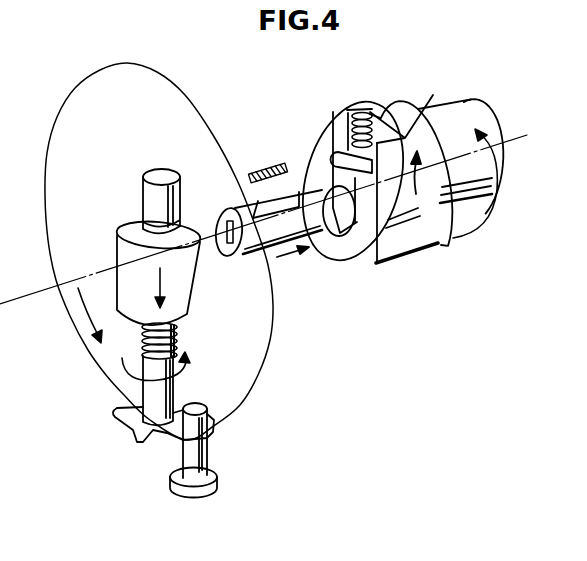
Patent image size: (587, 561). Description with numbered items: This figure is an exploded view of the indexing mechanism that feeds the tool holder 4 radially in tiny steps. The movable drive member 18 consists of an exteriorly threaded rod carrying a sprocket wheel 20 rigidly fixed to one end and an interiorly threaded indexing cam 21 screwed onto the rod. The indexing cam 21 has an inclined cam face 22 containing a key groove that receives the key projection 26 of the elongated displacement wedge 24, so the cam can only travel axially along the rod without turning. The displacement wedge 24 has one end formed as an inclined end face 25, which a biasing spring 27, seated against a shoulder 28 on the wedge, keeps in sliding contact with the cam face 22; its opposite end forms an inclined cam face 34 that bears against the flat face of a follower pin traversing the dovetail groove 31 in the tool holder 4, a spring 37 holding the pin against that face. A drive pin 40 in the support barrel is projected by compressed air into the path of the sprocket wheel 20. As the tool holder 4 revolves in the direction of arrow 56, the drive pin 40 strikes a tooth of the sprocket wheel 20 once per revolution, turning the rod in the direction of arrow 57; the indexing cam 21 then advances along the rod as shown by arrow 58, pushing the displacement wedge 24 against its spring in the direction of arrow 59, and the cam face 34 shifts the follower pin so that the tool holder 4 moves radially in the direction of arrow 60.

The tool holder 4 is at (460, 139).
The movable drive member 18 is at (145, 345).
The sprocket wheel 20 is at (135, 440).
The indexing cam 21 is at (121, 256).
The cam face 22 is at (196, 286).
The displacement wedge 24 is at (317, 236).
The inclined end face 25 is at (227, 248).
The key projection 26 is at (228, 222).
The biasing spring 27 is at (258, 174).
The shoulder 28 is at (258, 198).
The dovetail groove 31 is at (338, 123).
The inclined cam face 34 is at (352, 236).
The spring 37 is at (374, 114).
The drive pin 40 is at (200, 458).
The arrow 56 is at (89, 311).
The arrow 57 is at (190, 376).
The arrow 58 is at (168, 278).
The arrow 59 is at (277, 257).
The arrow 60 is at (416, 194).